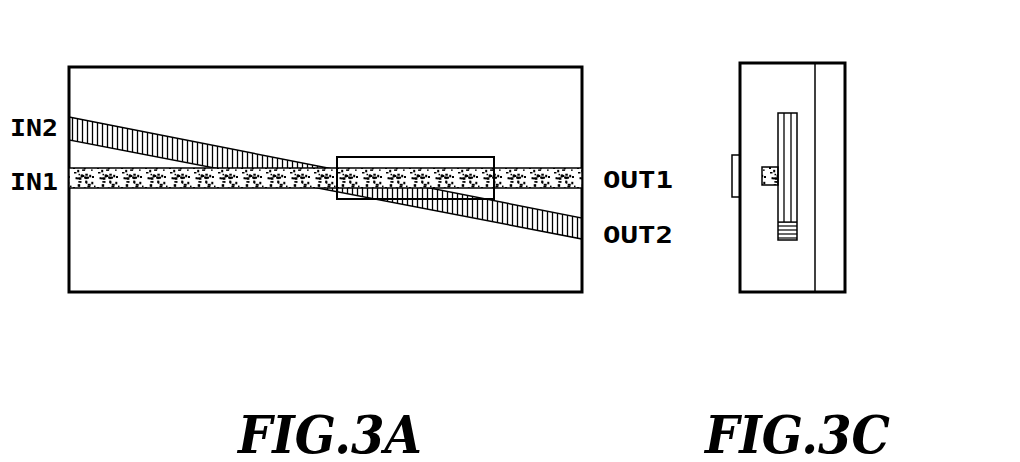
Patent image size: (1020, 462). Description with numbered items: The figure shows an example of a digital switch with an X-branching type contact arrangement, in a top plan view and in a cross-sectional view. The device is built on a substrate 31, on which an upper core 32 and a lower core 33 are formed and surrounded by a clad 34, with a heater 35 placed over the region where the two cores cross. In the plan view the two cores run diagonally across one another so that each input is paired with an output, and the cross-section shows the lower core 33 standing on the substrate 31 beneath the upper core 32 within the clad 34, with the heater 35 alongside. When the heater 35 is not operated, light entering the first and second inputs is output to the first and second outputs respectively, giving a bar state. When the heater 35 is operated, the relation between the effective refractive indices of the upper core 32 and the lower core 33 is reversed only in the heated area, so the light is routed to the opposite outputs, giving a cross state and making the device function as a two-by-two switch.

In FIG. 3C, the substrate 31 is at (825, 292).
In FIG. 3A, the upper core 32 is at (459, 157).
In FIG. 3C, the upper core 32 is at (769, 166).
In FIG. 3A, the lower core 33 is at (515, 226).
In FIG. 3C, the lower core 33 is at (788, 240).
In FIG. 3C, the clad 34 is at (797, 85).
In FIG. 3A, the heater 35 is at (407, 157).
In FIG. 3C, the heater 35 is at (732, 155).